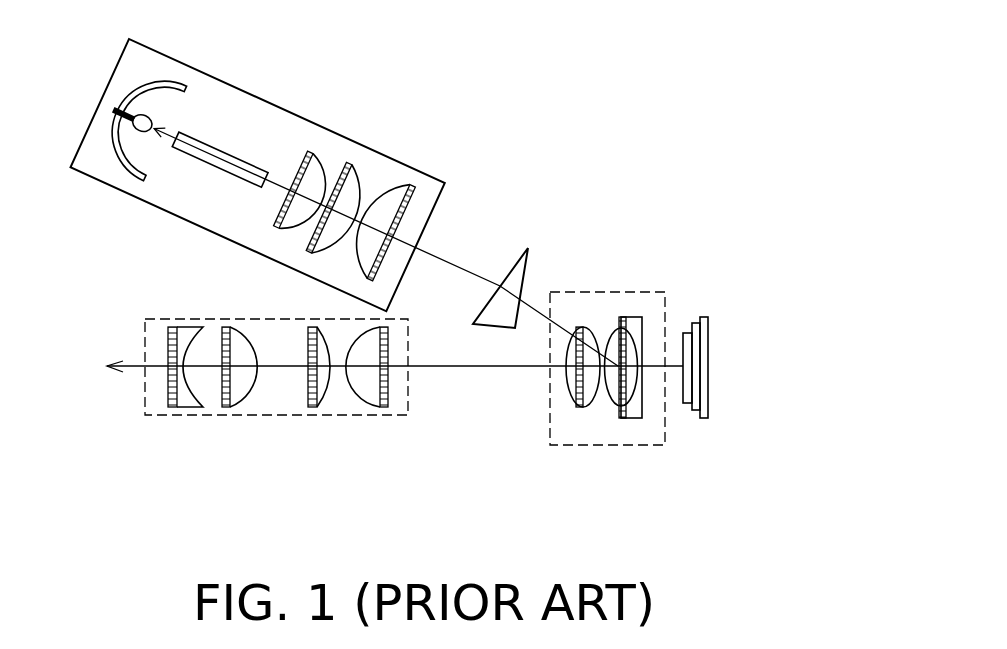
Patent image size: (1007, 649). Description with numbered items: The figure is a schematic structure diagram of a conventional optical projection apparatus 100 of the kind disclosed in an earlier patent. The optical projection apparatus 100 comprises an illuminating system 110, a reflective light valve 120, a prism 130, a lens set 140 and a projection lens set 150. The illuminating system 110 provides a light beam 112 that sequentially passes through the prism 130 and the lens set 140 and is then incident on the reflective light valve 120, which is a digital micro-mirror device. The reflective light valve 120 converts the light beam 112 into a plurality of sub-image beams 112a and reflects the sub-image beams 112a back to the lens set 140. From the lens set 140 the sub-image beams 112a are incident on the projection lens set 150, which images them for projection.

The optical projection apparatus 100 is at (757, 534).
The illuminating system 110 is at (282, 107).
The light beam 112 is at (478, 270).
The sub-image beams 112a is at (463, 368).
The reflective light valve 120 is at (705, 317).
The prism 130 is at (520, 256).
The lens set 140 is at (617, 290).
The projection lens set 150 is at (265, 417).